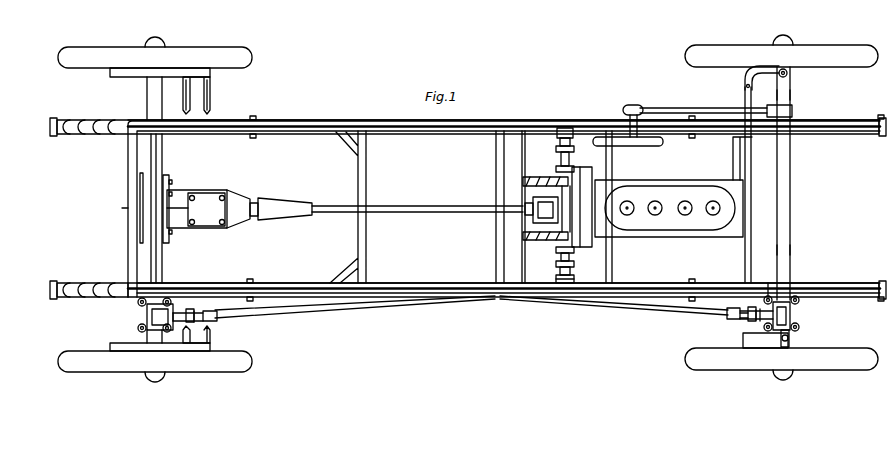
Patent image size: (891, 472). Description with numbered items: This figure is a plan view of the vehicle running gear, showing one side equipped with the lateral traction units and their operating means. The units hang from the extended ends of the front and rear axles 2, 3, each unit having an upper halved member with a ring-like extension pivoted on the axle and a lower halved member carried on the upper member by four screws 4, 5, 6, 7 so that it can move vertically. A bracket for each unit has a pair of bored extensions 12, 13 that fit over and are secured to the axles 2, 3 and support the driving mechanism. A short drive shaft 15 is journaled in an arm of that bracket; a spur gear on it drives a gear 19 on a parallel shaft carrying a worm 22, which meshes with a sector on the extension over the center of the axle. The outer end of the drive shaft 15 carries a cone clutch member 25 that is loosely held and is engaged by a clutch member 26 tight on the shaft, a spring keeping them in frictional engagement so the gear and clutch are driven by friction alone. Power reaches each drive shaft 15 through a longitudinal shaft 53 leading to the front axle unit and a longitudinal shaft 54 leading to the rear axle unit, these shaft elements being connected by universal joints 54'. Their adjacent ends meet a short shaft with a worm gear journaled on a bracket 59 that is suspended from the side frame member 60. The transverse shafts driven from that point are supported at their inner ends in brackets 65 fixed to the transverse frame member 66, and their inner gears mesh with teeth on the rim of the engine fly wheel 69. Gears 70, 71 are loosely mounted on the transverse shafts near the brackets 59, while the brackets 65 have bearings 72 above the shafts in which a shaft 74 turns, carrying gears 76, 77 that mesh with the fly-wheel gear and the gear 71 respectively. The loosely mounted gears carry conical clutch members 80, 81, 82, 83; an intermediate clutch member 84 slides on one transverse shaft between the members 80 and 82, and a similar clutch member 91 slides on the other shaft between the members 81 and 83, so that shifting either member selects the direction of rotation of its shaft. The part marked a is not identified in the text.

The axle 2 is at (790, 92).
The axle 3 is at (147, 332).
The screw 4 is at (128, 297).
The screw 5 is at (138, 328).
The screw 6 is at (196, 321).
The screw 7 is at (183, 302).
The bored extension 12 is at (167, 298).
The bored extension 13 is at (163, 330).
The drive shaft 15 is at (750, 318).
The gear 19 is at (178, 306).
The worm 22 is at (138, 304).
The cone clutch member 25 is at (178, 314).
The clutch member 26 is at (192, 316).
The longitudinal shaft 53 is at (665, 306).
The longitudinal shaft 54 is at (355, 314).
The universal joint 54' is at (355, 302).
The bracket 59 is at (590, 128).
The side frame member 60 is at (506, 128).
The bracket 65 is at (522, 182).
The transverse frame member 66 is at (360, 245).
The engine fly wheel 69 is at (592, 186).
The gear 70 is at (556, 278).
The gear 71 is at (556, 152).
The bearing 72 is at (600, 190).
The shaft 74 is at (558, 236).
The gear 76 is at (556, 250).
The gear 77 is at (558, 142).
The clutch member 80 is at (570, 257).
The clutch member 81 is at (547, 208).
The clutch member 82 is at (570, 270).
The clutch member 83 is at (570, 152).
The intermediate clutch member 84 is at (556, 264).
The clutch member 91 is at (556, 169).
The plate a is at (147, 318).